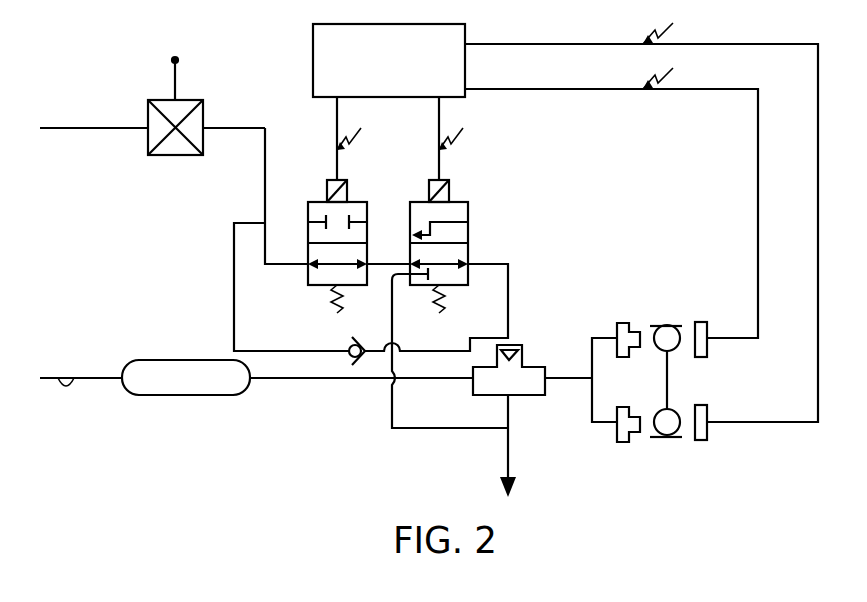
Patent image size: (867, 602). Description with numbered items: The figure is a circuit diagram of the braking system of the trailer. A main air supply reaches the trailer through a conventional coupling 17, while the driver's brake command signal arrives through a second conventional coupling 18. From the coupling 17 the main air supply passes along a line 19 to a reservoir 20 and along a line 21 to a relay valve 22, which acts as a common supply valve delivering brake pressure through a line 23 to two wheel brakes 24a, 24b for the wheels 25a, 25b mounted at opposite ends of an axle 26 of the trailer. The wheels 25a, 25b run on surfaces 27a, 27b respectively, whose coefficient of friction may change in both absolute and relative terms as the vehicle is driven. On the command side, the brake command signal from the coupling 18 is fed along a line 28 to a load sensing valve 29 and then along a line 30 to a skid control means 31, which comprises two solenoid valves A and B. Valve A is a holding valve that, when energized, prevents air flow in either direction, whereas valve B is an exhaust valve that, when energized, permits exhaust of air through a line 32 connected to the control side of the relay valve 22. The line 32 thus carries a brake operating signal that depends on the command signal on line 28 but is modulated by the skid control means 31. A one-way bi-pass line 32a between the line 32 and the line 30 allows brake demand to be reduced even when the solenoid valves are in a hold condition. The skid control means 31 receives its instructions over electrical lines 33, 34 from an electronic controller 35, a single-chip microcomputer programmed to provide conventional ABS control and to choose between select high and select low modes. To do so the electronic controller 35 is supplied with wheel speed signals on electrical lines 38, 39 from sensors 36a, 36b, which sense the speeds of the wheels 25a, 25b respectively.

The coupling 17 is at (66, 387).
The coupling 18 is at (52, 131).
The line 19 is at (105, 378).
The reservoir 20 is at (203, 395).
The line 21 is at (340, 380).
The relay valve 22 is at (473, 387).
The line 23 is at (573, 379).
The wheel brake 24a is at (628, 323).
The wheel brake 24b is at (625, 443).
The wheel 25a is at (651, 333).
The wheel 25b is at (652, 438).
The axle 26 is at (668, 393).
The surface 27a is at (677, 325).
The surface 27b is at (677, 438).
The line 28 is at (118, 129).
The load sensing valve 29 is at (204, 100).
The line 30 is at (243, 128).
The skid control means 31 is at (304, 289).
The line 32 is at (505, 272).
The one-way bi-pass line 32a is at (233, 283).
The electrical line 33 is at (337, 113).
The electrical line 34 is at (439, 120).
The electronic controller 35 is at (389, 60).
The sensor 36a is at (700, 322).
The sensor 36b is at (707, 440).
The electrical line 38 is at (758, 122).
The electrical line 39 is at (818, 150).